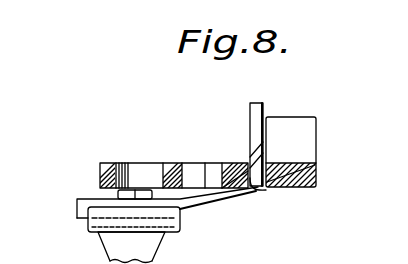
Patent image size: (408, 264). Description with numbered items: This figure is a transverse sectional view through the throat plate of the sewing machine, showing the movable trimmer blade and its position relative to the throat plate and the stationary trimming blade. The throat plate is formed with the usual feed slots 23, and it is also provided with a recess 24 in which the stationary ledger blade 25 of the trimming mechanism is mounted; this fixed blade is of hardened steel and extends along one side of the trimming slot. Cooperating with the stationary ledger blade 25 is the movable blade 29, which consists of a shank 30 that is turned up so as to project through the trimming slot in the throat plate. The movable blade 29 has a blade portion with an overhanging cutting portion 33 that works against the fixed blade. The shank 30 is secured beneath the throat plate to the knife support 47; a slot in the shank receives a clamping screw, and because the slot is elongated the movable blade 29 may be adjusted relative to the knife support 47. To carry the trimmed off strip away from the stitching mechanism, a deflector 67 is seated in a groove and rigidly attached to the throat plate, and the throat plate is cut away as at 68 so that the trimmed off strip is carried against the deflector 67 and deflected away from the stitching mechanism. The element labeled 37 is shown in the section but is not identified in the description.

The feed slots 23 is at (188, 163).
The stationary ledger blade 25 is at (258, 193).
The movable blade 29 is at (257, 112).
The overhanging cutting portion 33 is at (257, 148).
The deflector 67 is at (289, 130).
The cut away portion 68 is at (288, 166).
The base plate 37 is at (312, 179).
The shank 30 is at (128, 203).
The recess 24 is at (214, 196).
The knife support 47 is at (137, 245).